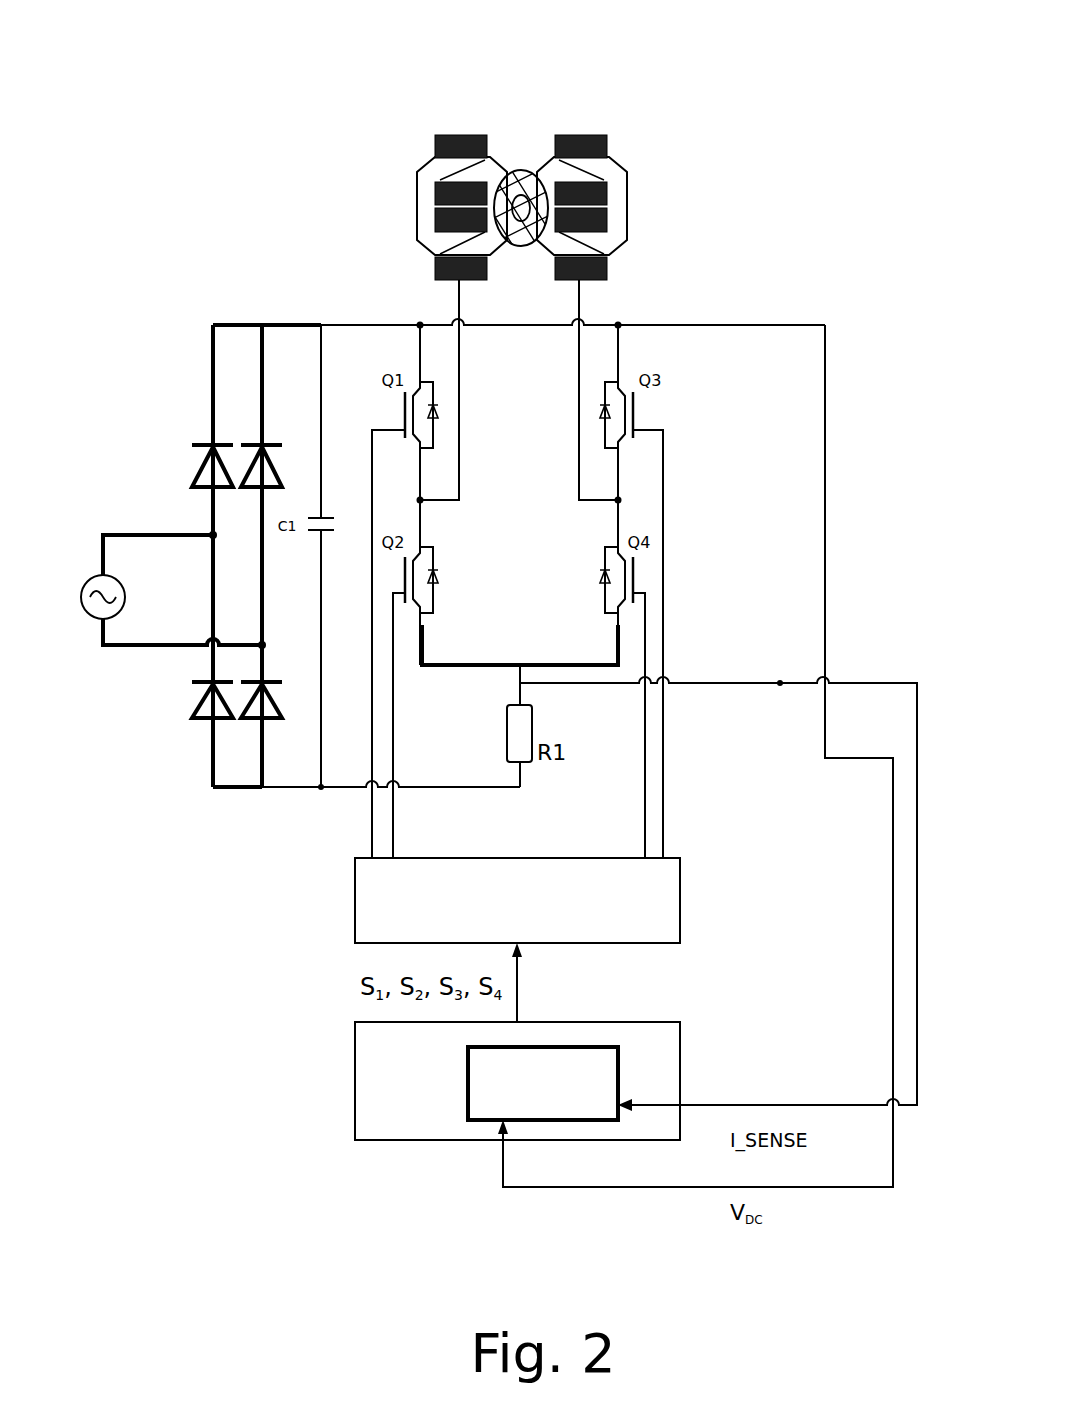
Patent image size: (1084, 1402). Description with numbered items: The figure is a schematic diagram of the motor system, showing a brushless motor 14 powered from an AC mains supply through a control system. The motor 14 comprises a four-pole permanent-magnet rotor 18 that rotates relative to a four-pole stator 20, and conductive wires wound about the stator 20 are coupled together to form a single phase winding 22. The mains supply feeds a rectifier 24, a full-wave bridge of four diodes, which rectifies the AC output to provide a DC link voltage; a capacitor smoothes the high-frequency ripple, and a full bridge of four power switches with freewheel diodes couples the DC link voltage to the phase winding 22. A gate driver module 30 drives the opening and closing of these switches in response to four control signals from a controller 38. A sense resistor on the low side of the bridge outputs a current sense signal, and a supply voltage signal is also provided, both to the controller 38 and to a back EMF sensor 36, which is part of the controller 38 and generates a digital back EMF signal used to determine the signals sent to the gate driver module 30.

The brushless motor 14 is at (397, 128).
The permanent-magnet rotor 18 is at (527, 172).
The stator 20 is at (420, 214).
The phase winding 22 is at (468, 135).
The rectifier 24 is at (175, 406).
The gate driver module 30 is at (368, 915).
The back EMF sensor 36 is at (587, 1078).
The controller 38 is at (383, 1090).